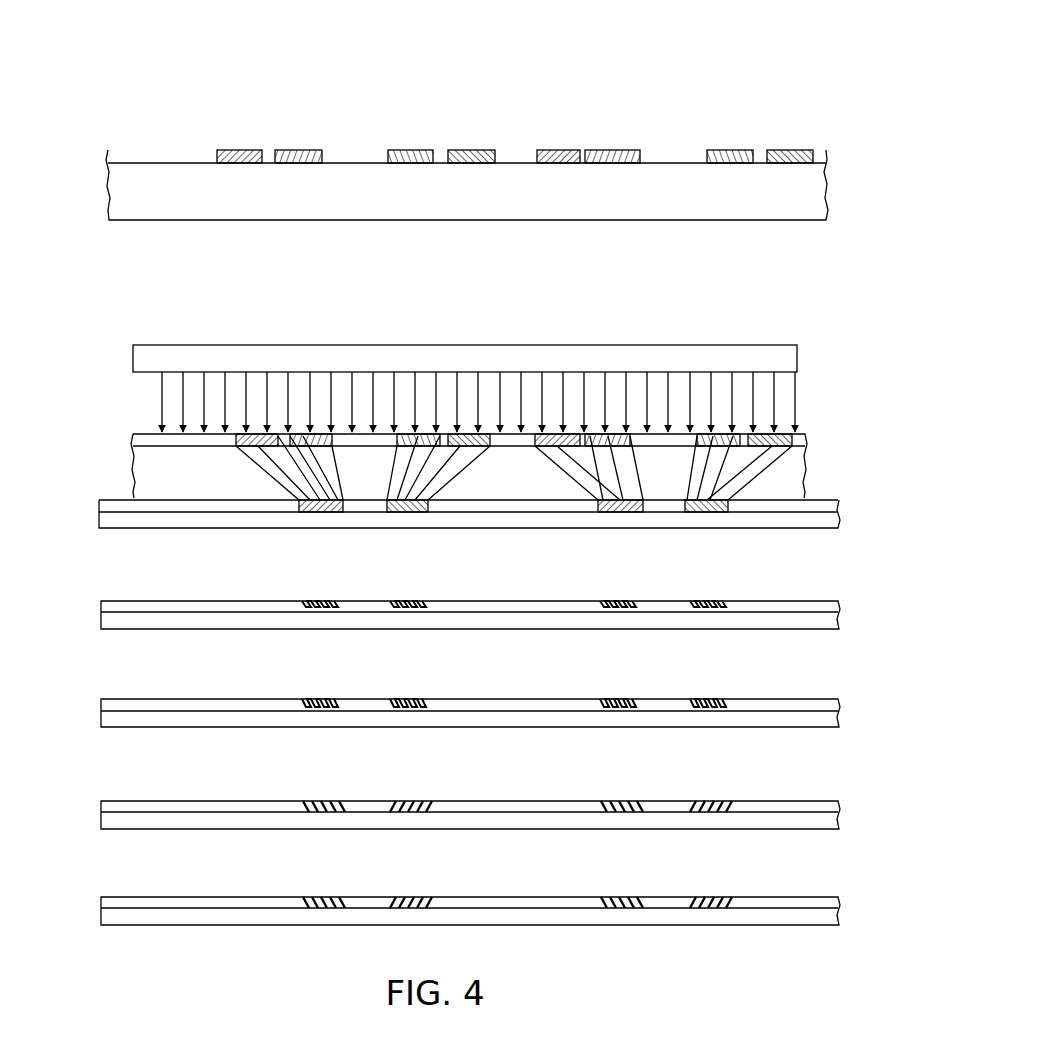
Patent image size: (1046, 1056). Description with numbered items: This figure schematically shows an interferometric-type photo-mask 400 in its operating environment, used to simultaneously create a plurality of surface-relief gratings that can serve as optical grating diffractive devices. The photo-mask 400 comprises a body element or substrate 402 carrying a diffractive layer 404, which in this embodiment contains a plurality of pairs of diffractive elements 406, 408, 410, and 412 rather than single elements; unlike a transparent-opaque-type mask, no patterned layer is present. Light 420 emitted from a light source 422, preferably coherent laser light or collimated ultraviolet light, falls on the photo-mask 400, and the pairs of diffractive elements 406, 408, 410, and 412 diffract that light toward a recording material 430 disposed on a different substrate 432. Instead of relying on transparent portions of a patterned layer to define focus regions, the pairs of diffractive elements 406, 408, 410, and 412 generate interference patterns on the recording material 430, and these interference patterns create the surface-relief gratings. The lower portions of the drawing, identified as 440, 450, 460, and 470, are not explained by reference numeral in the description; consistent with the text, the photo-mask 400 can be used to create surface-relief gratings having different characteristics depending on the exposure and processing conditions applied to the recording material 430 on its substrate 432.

The photo-mask 400 is at (440, 135).
The substrate 402 is at (110, 183).
The diffractive layer 404 is at (175, 150).
The pair of diffractive elements 406 is at (267, 130).
The pair of diffractive elements 408 is at (440, 130).
The pair of diffractive elements 410 is at (585, 130).
The pair of diffractive elements 412 is at (756, 130).
The light 420 is at (819, 363).
The light source 422 is at (133, 345).
The recording material 430 is at (110, 498).
The substrate 432 is at (840, 523).
The exposed photoresist layer 440 is at (81, 613).
The developed photoresist layer 450 is at (81, 721).
The etched substrate with grating 460 is at (86, 813).
The finished blazed grating 470 is at (86, 911).